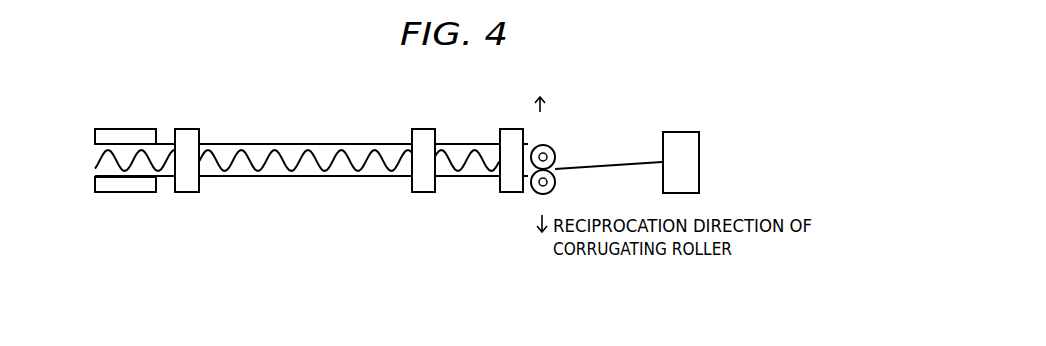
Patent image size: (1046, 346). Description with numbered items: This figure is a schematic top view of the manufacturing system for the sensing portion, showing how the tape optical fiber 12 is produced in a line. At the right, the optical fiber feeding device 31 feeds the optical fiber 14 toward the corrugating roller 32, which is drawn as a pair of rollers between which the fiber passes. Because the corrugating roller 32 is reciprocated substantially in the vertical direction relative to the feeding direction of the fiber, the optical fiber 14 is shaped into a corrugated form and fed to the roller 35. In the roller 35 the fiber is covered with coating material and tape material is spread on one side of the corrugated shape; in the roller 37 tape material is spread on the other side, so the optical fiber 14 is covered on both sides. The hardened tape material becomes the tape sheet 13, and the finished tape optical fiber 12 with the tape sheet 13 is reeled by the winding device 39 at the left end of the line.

The tape optical fiber 12 is at (240, 143).
The tape sheet 13 is at (363, 143).
The optical fiber 14 is at (603, 163).
The optical fiber feeding device 31 is at (682, 132).
The corrugating roller 32 is at (551, 145).
The roller 35 is at (505, 128).
The roller 37 is at (422, 192).
The winding device 39 is at (108, 193).